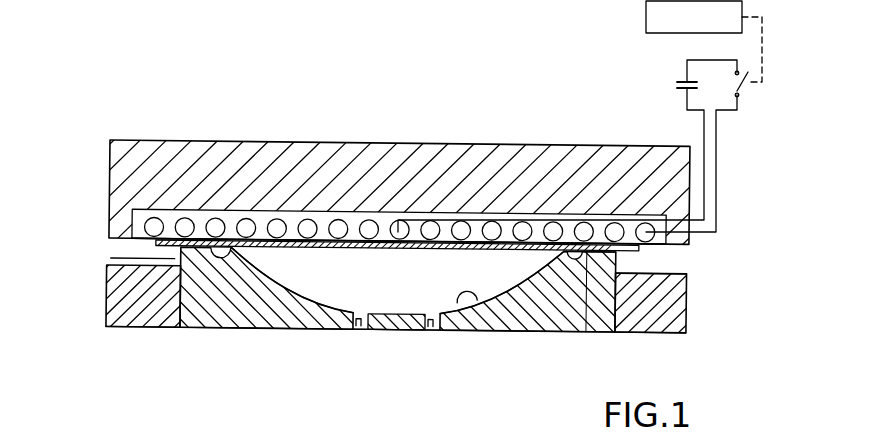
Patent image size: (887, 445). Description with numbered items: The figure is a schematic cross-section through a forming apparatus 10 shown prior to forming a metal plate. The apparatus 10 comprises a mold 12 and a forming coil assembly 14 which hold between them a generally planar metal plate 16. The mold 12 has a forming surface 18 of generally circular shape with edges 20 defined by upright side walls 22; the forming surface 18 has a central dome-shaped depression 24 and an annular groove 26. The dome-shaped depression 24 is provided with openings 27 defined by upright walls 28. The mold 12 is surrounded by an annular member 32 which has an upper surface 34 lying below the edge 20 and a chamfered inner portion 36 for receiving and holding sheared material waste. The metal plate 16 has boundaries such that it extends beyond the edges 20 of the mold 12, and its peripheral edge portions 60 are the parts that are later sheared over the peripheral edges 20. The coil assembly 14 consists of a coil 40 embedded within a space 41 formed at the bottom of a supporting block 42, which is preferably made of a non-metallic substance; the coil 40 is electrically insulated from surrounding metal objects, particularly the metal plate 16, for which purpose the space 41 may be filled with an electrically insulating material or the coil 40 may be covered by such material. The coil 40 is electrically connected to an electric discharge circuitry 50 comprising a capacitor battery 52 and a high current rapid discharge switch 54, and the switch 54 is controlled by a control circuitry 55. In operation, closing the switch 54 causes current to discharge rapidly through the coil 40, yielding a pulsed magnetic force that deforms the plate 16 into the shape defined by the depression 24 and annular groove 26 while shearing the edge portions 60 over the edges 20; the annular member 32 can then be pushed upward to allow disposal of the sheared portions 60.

The apparatus 10 is at (73, 305).
The mold 12 is at (229, 306).
The forming coil assembly 14 is at (100, 176).
The metal plate 16 is at (618, 253).
The forming surface 18 is at (338, 256).
The edges 20 is at (620, 272).
The upright side walls 22 is at (178, 247).
The central dome-shaped depression 24 is at (495, 315).
The annular groove 26 is at (590, 333).
The openings 27 is at (361, 328).
The upright walls 28 is at (367, 310).
The annular member 32 is at (665, 320).
The upper surface 34 is at (108, 266).
The chamfered inner portion 36 is at (182, 265).
The coil 40 is at (307, 226).
The space 41 is at (203, 218).
The supporting block 42 is at (542, 162).
The electric discharge circuitry 50 is at (655, 79).
The capacitor battery 52 is at (682, 92).
The high current rapid discharge switch 54 is at (742, 90).
The control circuitry 55 is at (646, 14).
The peripheral edge portions 60 is at (157, 242).